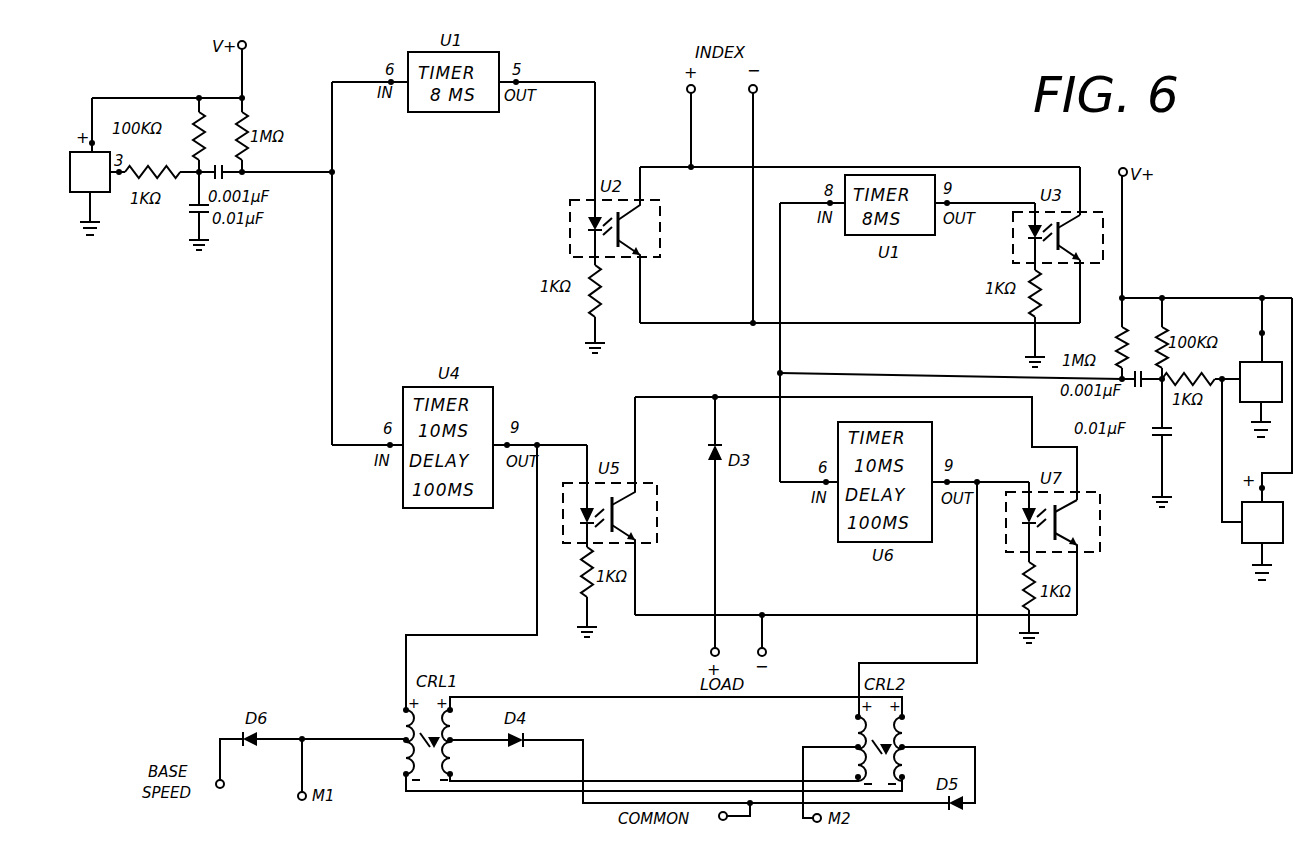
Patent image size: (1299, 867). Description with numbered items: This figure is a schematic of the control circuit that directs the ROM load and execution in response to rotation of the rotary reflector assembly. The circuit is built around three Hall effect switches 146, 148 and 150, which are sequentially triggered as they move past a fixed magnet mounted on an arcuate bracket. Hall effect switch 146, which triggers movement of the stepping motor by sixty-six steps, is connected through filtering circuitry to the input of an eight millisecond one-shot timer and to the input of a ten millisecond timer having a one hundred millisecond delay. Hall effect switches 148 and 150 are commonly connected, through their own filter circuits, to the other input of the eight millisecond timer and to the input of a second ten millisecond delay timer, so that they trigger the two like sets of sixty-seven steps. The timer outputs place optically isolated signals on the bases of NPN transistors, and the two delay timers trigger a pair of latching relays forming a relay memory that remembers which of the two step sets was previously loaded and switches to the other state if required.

The Hall effect switch 146 is at (74, 193).
The Hall effect switch 148 is at (1252, 362).
The Hall effect switch 150 is at (1242, 537).